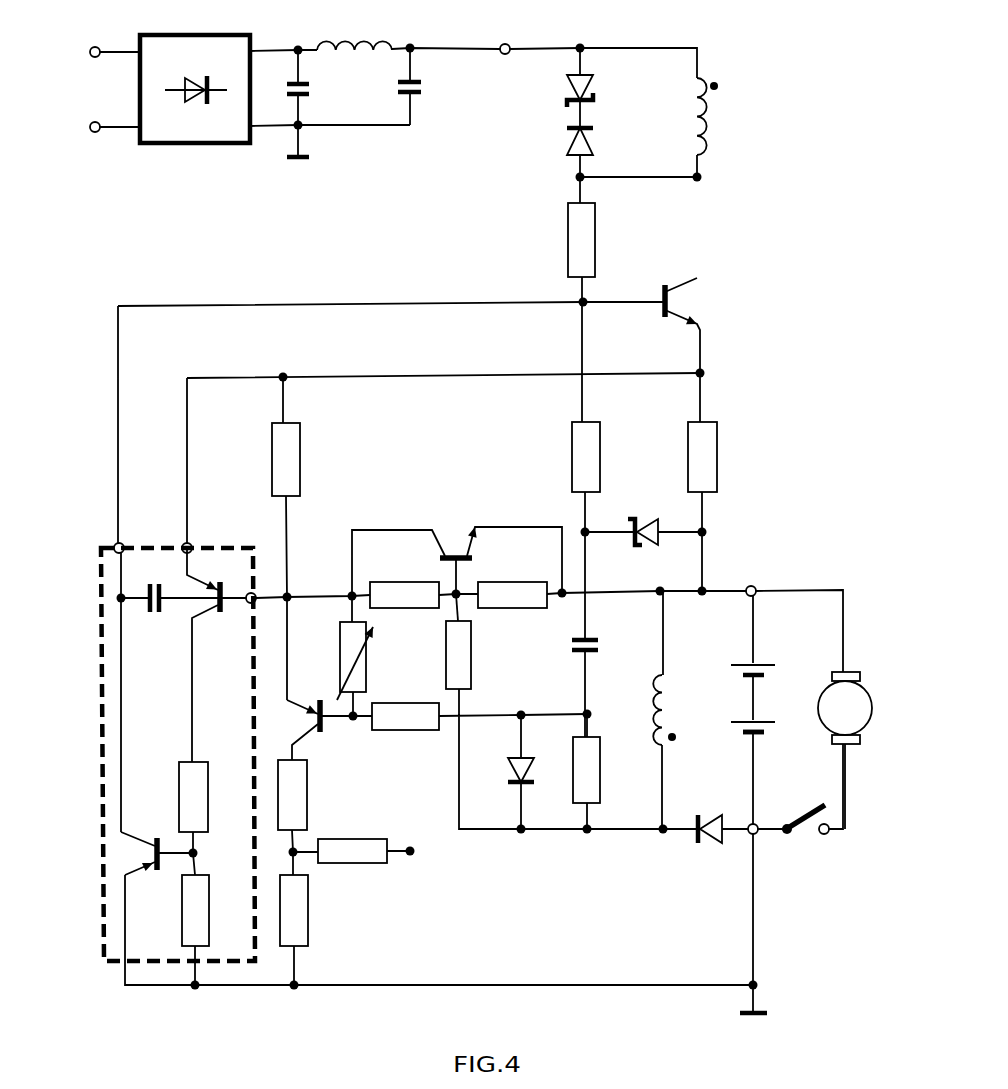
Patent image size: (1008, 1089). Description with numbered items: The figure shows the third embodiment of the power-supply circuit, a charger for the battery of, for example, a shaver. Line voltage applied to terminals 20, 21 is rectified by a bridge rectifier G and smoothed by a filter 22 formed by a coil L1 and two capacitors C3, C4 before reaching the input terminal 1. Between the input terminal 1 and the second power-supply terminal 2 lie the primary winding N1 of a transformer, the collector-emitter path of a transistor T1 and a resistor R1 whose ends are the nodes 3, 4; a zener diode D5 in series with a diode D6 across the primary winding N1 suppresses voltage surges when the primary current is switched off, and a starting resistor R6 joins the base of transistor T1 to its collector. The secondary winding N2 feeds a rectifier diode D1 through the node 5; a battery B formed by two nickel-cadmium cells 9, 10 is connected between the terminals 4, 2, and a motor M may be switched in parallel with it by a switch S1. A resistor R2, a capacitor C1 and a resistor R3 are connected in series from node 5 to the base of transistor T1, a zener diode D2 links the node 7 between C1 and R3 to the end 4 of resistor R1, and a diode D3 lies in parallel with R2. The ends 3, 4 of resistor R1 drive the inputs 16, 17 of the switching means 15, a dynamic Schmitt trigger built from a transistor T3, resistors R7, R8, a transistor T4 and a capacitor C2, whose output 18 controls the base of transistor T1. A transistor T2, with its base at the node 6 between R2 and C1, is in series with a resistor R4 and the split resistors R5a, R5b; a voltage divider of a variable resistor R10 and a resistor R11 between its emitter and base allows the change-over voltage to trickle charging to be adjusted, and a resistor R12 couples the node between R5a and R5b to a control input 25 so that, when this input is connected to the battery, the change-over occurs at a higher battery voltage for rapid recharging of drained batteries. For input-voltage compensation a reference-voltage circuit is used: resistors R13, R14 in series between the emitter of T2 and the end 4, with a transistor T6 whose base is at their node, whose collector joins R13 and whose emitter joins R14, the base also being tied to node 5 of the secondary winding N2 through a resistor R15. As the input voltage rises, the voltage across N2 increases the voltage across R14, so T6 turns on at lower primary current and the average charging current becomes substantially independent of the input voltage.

The terminal 20 is at (97, 47).
The terminal 21 is at (97, 122).
The bridge rectifier G is at (190, 143).
The coil L1 is at (352, 40).
The capacitor C3 is at (287, 89).
The filter 22 is at (348, 108).
The capacitor C4 is at (397, 88).
The input terminal 1 is at (505, 44).
The zener diode D5 is at (567, 83).
The diode D6 is at (567, 133).
The primary winding N1 is at (705, 113).
The starting resistor R6 is at (597, 238).
The transistor T1 is at (666, 282).
The end of resistor R1 3 is at (705, 373).
The resistor R4 is at (301, 458).
The output 18 is at (124, 544).
The input 16 is at (192, 544).
The input 17 is at (255, 593).
The first switching means 15 is at (104, 963).
The capacitor C2 is at (155, 614).
The transistor T3 is at (221, 614).
The resistor R7 is at (178, 775).
The transistor T4 is at (155, 835).
The resistor R8 is at (180, 907).
The transistor T2 is at (318, 698).
The resistor R5a is at (309, 790).
The resistor R5b is at (310, 910).
The resistor R12 is at (355, 866).
The control input 25 is at (413, 856).
The resistor R13 is at (406, 610).
The resistor R14 is at (515, 610).
The transistor T6 is at (478, 557).
The variable resistor R10 is at (368, 660).
The resistor R15 is at (473, 660).
The resistor R11 is at (406, 730).
The diode D3 is at (507, 768).
The resistor R3 is at (601, 452).
The resistor R1 is at (718, 452).
The zener diode D2 is at (650, 516).
The node 7 is at (590, 534).
The capacitor C1 is at (602, 646).
The node 6 is at (583, 708).
The resistor R2 is at (601, 768).
The secondary winding N2 is at (653, 712).
The node 5 is at (663, 835).
The rectifier diode D1 is at (714, 812).
The second power-supply terminal 2 is at (757, 834).
The terminal 4 is at (752, 586).
The battery B is at (748, 699).
The nickel-cadmium cell 9 is at (768, 670).
The nickel-cadmium cell 10 is at (768, 728).
The switch S1 is at (806, 812).
The motor M is at (835, 672).